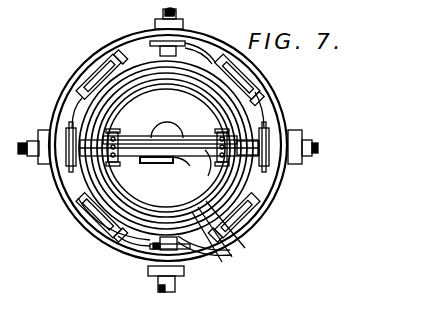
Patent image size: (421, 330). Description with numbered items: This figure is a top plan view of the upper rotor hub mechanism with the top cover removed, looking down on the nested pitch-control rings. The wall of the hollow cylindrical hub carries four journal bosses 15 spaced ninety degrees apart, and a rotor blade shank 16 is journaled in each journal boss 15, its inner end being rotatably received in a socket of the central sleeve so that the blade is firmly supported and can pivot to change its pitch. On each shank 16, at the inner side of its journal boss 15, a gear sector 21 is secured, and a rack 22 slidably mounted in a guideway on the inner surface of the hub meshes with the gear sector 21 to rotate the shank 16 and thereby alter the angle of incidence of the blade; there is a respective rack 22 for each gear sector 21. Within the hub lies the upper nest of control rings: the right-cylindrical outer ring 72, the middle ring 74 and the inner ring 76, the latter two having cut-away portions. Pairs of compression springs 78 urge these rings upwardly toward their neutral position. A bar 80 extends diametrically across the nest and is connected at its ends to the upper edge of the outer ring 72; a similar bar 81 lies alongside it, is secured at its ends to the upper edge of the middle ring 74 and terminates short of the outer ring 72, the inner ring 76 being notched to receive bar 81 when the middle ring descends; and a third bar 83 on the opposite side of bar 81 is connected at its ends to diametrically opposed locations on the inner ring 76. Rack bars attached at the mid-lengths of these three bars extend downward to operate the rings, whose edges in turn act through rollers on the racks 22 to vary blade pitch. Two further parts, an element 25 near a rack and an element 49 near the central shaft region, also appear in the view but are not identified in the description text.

The journal boss 15 is at (43, 131).
The cylindrical shank 16 is at (118, 110).
The gear sector 21 is at (150, 250).
The rack 22 is at (88, 229).
The slotted bracket 25 is at (80, 199).
The shaft coupling 49 is at (221, 132).
The outer ring 72 is at (198, 252).
The middle ring 74 is at (219, 254).
The inner ring 76 is at (226, 246).
The compression springs 78 is at (219, 138).
The bar 80 is at (196, 152).
The bar 81 is at (207, 171).
The third bar 83 is at (184, 136).